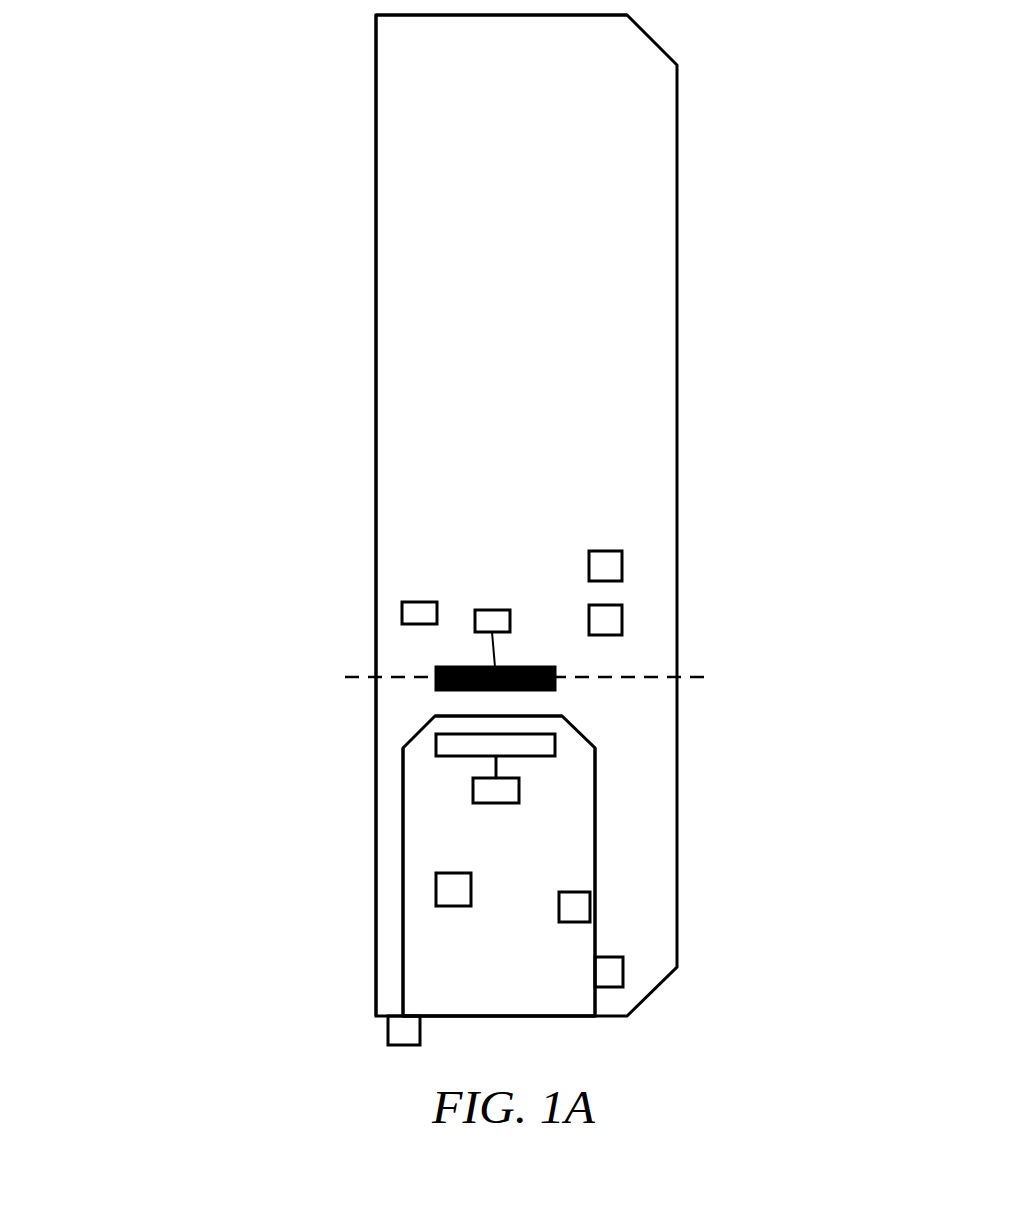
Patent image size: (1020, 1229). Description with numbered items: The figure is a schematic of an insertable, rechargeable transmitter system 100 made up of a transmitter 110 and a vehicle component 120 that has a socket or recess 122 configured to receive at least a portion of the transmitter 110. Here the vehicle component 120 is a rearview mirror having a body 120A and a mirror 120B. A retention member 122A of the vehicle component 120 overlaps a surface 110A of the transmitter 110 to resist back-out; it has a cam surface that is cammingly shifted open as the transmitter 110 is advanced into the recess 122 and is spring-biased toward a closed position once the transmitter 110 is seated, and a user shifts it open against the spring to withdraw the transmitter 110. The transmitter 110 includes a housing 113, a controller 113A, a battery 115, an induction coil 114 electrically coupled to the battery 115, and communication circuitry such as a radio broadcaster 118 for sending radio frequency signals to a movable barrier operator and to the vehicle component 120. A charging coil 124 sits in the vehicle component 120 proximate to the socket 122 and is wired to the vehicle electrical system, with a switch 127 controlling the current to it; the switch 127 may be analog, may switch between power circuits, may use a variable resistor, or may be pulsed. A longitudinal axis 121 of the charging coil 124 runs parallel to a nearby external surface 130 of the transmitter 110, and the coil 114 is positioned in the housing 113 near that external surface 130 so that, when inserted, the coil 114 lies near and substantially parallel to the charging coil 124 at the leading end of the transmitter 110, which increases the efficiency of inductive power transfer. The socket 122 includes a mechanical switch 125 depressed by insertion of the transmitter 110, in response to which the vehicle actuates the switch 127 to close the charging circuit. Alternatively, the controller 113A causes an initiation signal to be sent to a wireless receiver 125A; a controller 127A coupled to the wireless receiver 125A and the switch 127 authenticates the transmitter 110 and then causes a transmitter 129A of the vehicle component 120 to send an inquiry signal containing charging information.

The insertable transmitter system 100 is at (172, 433).
The vehicle component 120 is at (555, 508).
The body 120A is at (417, 195).
The mirror 120B is at (375, 283).
The transmitter 110 is at (567, 848).
The external surface 130 is at (448, 715).
The socket 122 is at (595, 769).
The housing 113 is at (403, 930).
The surface 110A is at (582, 1017).
The longitudinal axis 121 is at (357, 677).
The charging coil 124 is at (556, 677).
The induction coil 114 is at (436, 745).
The battery 115 is at (473, 790).
The switch 127 is at (487, 610).
The transmitter 129A is at (402, 607).
The controller 127A is at (622, 565).
The wireless receiver 125A is at (622, 620).
The radio broadcaster 118 is at (436, 888).
The controller 113A is at (590, 906).
The mechanical switch 125 is at (623, 972).
The retention member 122A is at (388, 1030).